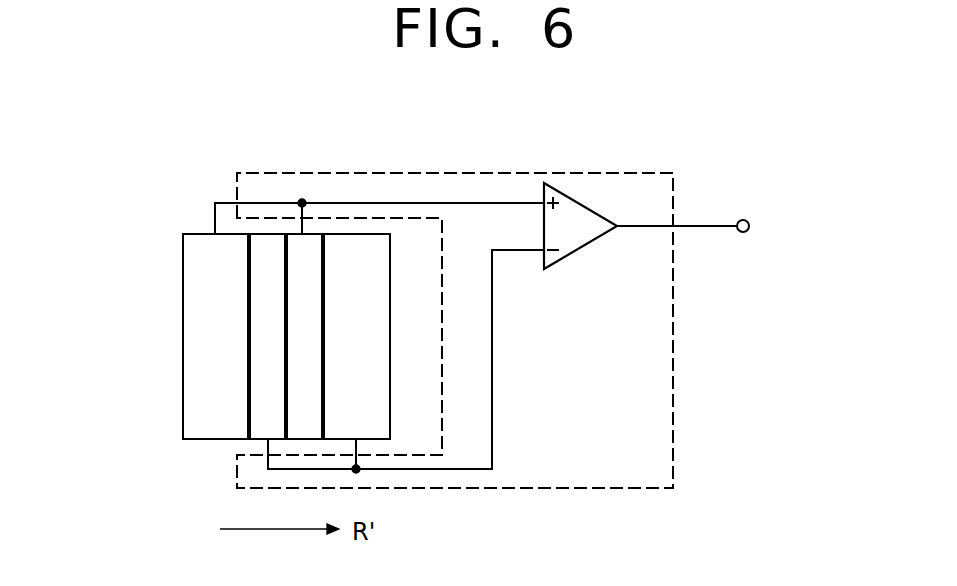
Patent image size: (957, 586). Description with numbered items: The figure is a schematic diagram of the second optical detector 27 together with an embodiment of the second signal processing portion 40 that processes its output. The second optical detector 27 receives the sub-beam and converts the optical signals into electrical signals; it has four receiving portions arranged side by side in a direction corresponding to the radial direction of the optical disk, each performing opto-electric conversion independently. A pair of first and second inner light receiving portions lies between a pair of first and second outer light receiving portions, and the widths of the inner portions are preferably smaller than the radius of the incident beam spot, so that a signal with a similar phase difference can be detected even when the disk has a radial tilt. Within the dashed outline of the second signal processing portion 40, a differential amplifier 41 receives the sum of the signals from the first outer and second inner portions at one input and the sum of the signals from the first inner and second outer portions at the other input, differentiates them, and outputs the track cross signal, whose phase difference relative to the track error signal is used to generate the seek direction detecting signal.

The second optical detector 27 is at (176, 224).
The second signal processing portion 40 is at (511, 298).
The differential amplifier 41 is at (582, 248).